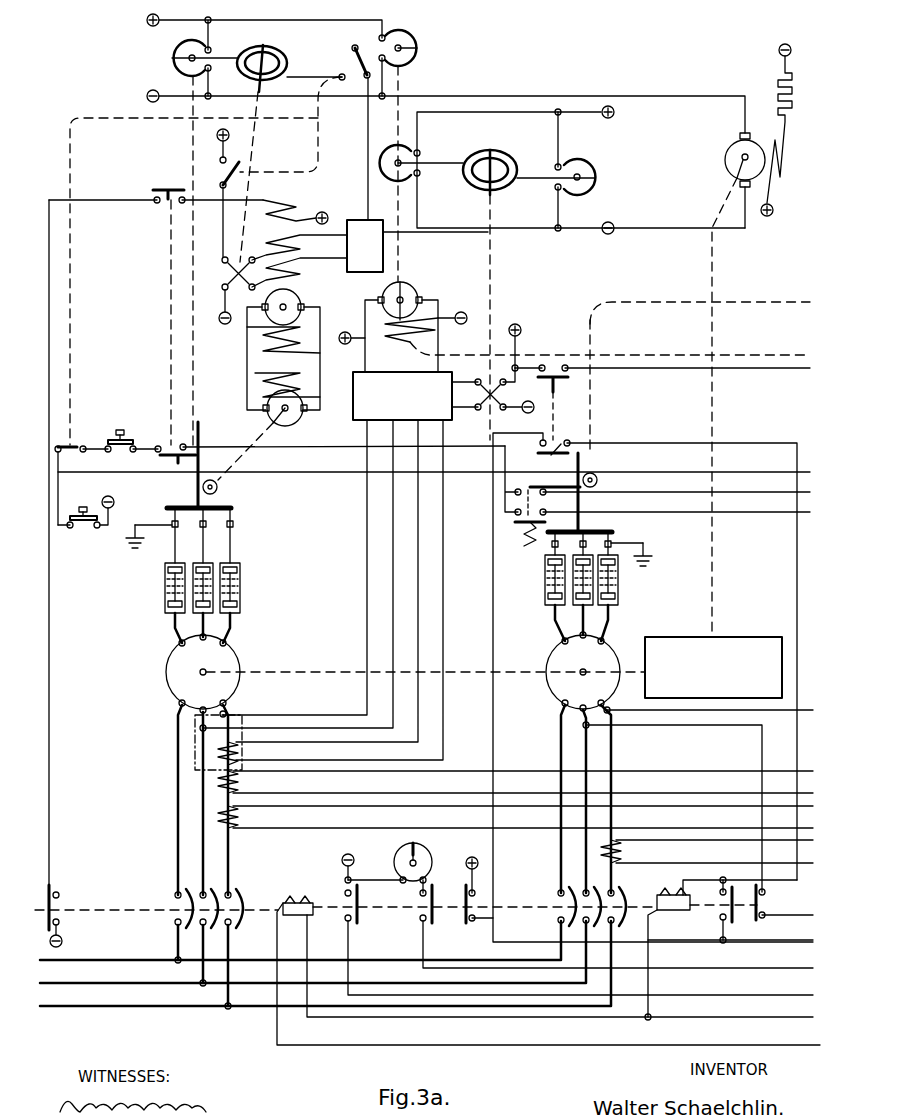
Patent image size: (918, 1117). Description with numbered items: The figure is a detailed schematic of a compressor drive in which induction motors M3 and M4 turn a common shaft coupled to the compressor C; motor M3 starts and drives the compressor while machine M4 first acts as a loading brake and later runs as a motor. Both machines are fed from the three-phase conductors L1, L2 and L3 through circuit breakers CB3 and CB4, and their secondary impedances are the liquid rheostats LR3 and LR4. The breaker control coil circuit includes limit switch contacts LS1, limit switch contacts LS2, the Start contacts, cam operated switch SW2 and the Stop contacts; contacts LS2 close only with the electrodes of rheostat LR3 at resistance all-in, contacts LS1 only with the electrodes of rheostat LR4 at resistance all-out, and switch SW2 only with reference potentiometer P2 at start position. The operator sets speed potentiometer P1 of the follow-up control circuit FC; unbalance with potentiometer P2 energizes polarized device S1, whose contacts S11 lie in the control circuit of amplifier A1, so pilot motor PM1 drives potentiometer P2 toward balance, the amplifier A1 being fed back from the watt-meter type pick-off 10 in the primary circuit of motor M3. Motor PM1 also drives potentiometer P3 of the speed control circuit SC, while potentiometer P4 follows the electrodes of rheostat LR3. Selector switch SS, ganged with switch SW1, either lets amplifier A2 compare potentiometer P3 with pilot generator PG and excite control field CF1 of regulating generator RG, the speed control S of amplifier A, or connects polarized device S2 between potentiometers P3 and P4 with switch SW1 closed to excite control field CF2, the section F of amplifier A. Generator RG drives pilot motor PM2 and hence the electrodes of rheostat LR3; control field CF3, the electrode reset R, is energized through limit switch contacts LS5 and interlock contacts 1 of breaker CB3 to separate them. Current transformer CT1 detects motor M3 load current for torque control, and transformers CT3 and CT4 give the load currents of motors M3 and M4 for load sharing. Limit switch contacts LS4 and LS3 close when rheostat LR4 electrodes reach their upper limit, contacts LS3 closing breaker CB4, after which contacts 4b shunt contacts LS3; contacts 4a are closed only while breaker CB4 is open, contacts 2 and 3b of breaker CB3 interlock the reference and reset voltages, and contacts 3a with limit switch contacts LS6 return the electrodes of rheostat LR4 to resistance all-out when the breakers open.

The second potentiometer P4 is at (176, 68).
The speed control circuit SC is at (245, 47).
The polarized sensitive device S2 is at (284, 66).
The selector switch SS is at (348, 130).
The reference potentiometer P3 is at (412, 38).
The reference potentiometer P2 is at (418, 176).
The follow-up control circuit FC is at (450, 210).
The polarized sensitive device S1 is at (510, 166).
The speed controlling potentiometer P1 is at (590, 170).
The pilot generator PG is at (726, 170).
The limit switch contacts LS5 is at (156, 187).
The switch SW1 is at (216, 193).
The electrode reset R is at (290, 196).
The control field winding CF3 is at (320, 194).
The control field CF1 is at (298, 246).
The speed control S is at (340, 280).
The follow-up section F is at (241, 306).
The amplifier A2 is at (417, 246).
The control field winding CF2 is at (298, 294).
The amplifier A is at (339, 325).
The regulating generator RG is at (266, 333).
The pilot motor PM2 is at (300, 420).
The pilot motor PM1 is at (413, 290).
The amplifier A1 is at (404, 410).
The contacts S11 is at (493, 400).
The limit switch contacts LS4 is at (659, 382).
The limit switch contacts LS3 is at (653, 680).
The limit switch contacts LS1 is at (518, 496).
The limit switch contacts LS6 is at (670, 501).
The cam operated switch SW2 is at (64, 452).
The Start push button contacts Start is at (128, 431).
The limit switch contacts LS2 is at (319, 459).
The Stop push button contacts Stop is at (86, 511).
The liquid rheostat LR3 is at (273, 586).
The induction motor M3 is at (170, 692).
The watt-meter type pick-off 10 is at (230, 712).
The current transformer CT1 is at (240, 782).
The current transformer CT3 is at (240, 816).
The interlock contacts 1 is at (48, 907).
The circuit breaker CB3 is at (273, 887).
The supply conductor L1 is at (85, 966).
The supply conductor L2 is at (87, 989).
The supply conductor L3 is at (87, 1013).
The normally open contacts 3b is at (358, 890).
The interlocking contacts 2 is at (434, 888).
The interlock contacts 3a is at (466, 916).
The liquid rheostat LR4 is at (655, 605).
The induction motor M4 is at (550, 692).
The compressor C is at (719, 660).
The current transformer CT4 is at (622, 852).
The circuit breaker CB4 is at (658, 887).
The contacts 4b is at (739, 910).
The interlock contacts 4a is at (768, 900).